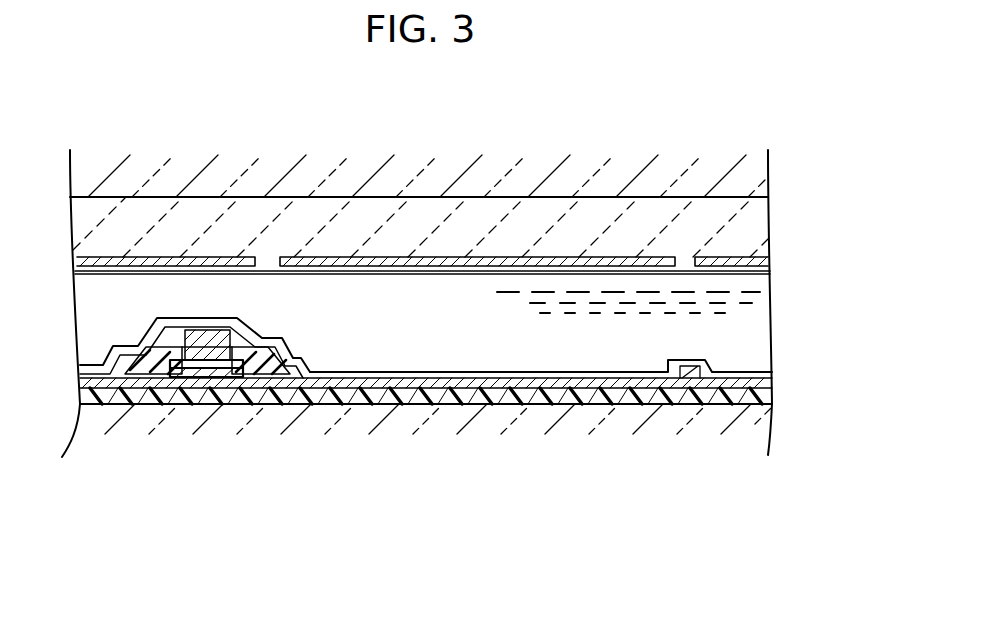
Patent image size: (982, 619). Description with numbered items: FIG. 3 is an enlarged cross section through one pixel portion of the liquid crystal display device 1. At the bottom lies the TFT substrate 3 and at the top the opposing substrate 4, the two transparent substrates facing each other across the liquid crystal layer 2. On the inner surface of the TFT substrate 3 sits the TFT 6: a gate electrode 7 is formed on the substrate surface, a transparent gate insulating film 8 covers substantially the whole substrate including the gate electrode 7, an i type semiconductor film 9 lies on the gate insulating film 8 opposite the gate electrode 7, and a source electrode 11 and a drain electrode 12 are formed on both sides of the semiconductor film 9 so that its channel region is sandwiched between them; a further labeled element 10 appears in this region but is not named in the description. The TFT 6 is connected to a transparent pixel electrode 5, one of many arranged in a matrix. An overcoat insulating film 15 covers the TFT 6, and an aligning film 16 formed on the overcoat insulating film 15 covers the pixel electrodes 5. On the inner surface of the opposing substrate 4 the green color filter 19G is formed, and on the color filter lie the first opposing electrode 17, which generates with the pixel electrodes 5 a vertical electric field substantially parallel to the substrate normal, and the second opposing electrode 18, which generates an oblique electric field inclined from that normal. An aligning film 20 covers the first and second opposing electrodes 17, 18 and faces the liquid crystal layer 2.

The liquid crystal display device 1 is at (789, 155).
The liquid crystal layer 2 is at (769, 318).
The TFT substrate 3 is at (484, 427).
The opposing substrate 4 is at (512, 190).
The pixel electrode 5 is at (580, 405).
The TFT 6 is at (241, 411).
The gate electrode 7 is at (205, 405).
The gate insulating film 8 is at (365, 404).
The i type semiconductor film 9 is at (170, 405).
The source electrode 10 is at (188, 352).
The source electrode 11 is at (248, 352).
The drain electrode 12 is at (170, 350).
The overcoat insulating film 15 is at (296, 346).
The aligning film 16 is at (480, 371).
The first opposing electrode 17 is at (431, 257).
The second opposing electrode 18 is at (185, 257).
The green color filter 19G is at (607, 215).
The aligning film 20 is at (400, 275).